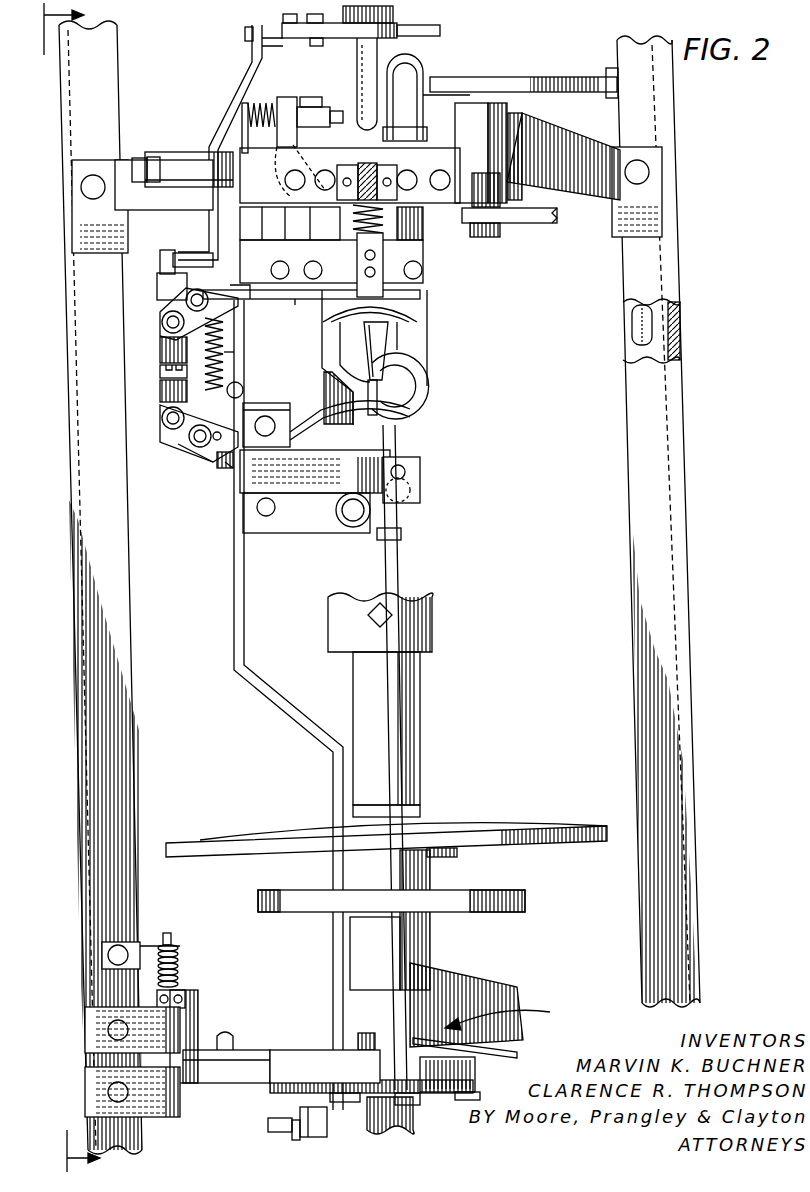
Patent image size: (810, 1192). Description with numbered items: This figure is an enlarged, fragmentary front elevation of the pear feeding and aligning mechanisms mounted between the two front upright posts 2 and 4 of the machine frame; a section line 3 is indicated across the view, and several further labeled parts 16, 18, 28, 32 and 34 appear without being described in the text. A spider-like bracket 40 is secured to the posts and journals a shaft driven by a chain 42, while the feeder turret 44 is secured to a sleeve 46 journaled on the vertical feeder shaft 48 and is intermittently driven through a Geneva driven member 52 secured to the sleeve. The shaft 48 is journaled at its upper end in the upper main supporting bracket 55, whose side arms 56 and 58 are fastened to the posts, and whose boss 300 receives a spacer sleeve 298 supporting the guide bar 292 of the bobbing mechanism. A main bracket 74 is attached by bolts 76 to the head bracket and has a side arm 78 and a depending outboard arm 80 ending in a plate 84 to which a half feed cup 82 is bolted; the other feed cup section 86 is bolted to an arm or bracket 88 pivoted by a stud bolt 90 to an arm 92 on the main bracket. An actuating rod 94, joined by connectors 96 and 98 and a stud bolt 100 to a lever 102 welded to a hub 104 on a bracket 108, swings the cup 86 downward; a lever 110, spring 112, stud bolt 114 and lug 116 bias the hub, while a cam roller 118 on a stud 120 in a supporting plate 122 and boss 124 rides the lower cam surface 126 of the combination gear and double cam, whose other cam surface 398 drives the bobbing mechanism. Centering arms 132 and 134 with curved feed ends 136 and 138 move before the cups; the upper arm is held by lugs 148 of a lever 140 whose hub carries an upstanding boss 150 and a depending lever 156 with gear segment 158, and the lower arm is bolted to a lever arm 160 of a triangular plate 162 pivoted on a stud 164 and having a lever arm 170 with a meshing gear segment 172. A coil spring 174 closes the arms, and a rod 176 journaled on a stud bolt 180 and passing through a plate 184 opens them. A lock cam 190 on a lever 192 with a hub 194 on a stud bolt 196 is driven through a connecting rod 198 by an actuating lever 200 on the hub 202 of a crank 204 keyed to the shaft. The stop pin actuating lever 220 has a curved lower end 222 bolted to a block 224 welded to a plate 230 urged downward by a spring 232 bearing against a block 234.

The front upright post 2 is at (668, 748).
The section line 3 is at (60, 587).
The front upright post 4 is at (115, 702).
The bracket block 16 is at (505, 165).
The support post 18 is at (357, 70).
The slot in post 28 is at (640, 322).
The cap cylinder 32 is at (423, 80).
The latch bracket 34 is at (335, 130).
The spider-like bracket 40 is at (482, 987).
The chain 42 is at (458, 851).
The feeder turret 44 is at (434, 615).
The sleeve 46 is at (419, 675).
The vertical feeder shaft 48 is at (412, 1000).
The driven member 52 is at (527, 895).
The upper main supporting bracket 55 is at (485, 85).
The side arm 56 is at (655, 145).
The side arm 58 is at (145, 206).
The main bracket 74 is at (440, 200).
The bolts 76 is at (290, 172).
The side arm 78 is at (185, 165).
The outboard arm 80 is at (224, 340).
The half feed cup 82 is at (325, 392).
The plate 84 is at (232, 526).
The feed cup section 86 is at (428, 388).
The arm or bracket 88 is at (422, 483).
The stud bolt 90 is at (400, 541).
The arm 92 is at (311, 520).
The actuating rod 94 is at (400, 720).
The connector 96 is at (372, 512).
The connector 98 is at (398, 1106).
The stud bolt 100 is at (470, 1083).
The lever 102 is at (270, 1086).
The hub 104 is at (258, 1050).
The bracket 108 is at (152, 1100).
The lever 110 is at (199, 1015).
The spring 112 is at (183, 968).
The stud bolt 114 is at (190, 998).
The lug or bracket 116 is at (172, 938).
The cam roller 118 is at (318, 1137).
The stud 120 is at (360, 1135).
The supporting plate 122 is at (275, 1132).
The boss 124 is at (298, 1140).
The lower cam surface 126 is at (366, 1105).
The upper pear centering arm 132 is at (299, 302).
The lower centering arm 134 is at (298, 456).
The curved outer feed end 136 is at (404, 309).
The curved outer feed end 138 is at (420, 412).
The lever 140 is at (165, 318).
The supporting lugs 148 is at (237, 300).
The upstanding boss 150 is at (160, 285).
The depending lever 156 is at (160, 345).
The gear segment 158 is at (160, 370).
The lever arm 160 is at (215, 456).
The triangular plate 162 is at (232, 466).
The stud 164 is at (200, 448).
The lever arm 170 is at (165, 420).
The gear segment 172 is at (162, 392).
The coil spring 174 is at (245, 350).
The rod 176 is at (235, 570).
The stud bolt 180 is at (243, 386).
The plate 184 is at (372, 1040).
The lock cam 190 is at (190, 257).
The lever 192 is at (212, 145).
The boss or hub 194 is at (157, 160).
The stud bolt 196 is at (135, 165).
The connecting rod 198 is at (255, 26).
The actuating lever 200 is at (440, 30).
The hub 202 is at (395, 10).
The crank 204 is at (398, 30).
The actuating lever 220 is at (420, 298).
The curved lower end 222 is at (396, 362).
The block 224 is at (386, 280).
The forwardly extending plate 230 is at (424, 264).
The spring 232 is at (353, 241).
The block 234 is at (370, 165).
The guide bar 292 is at (550, 217).
The spacer sleeve 298 is at (548, 160).
The boss 300 is at (515, 105).
The cam surface 398 is at (516, 1013).